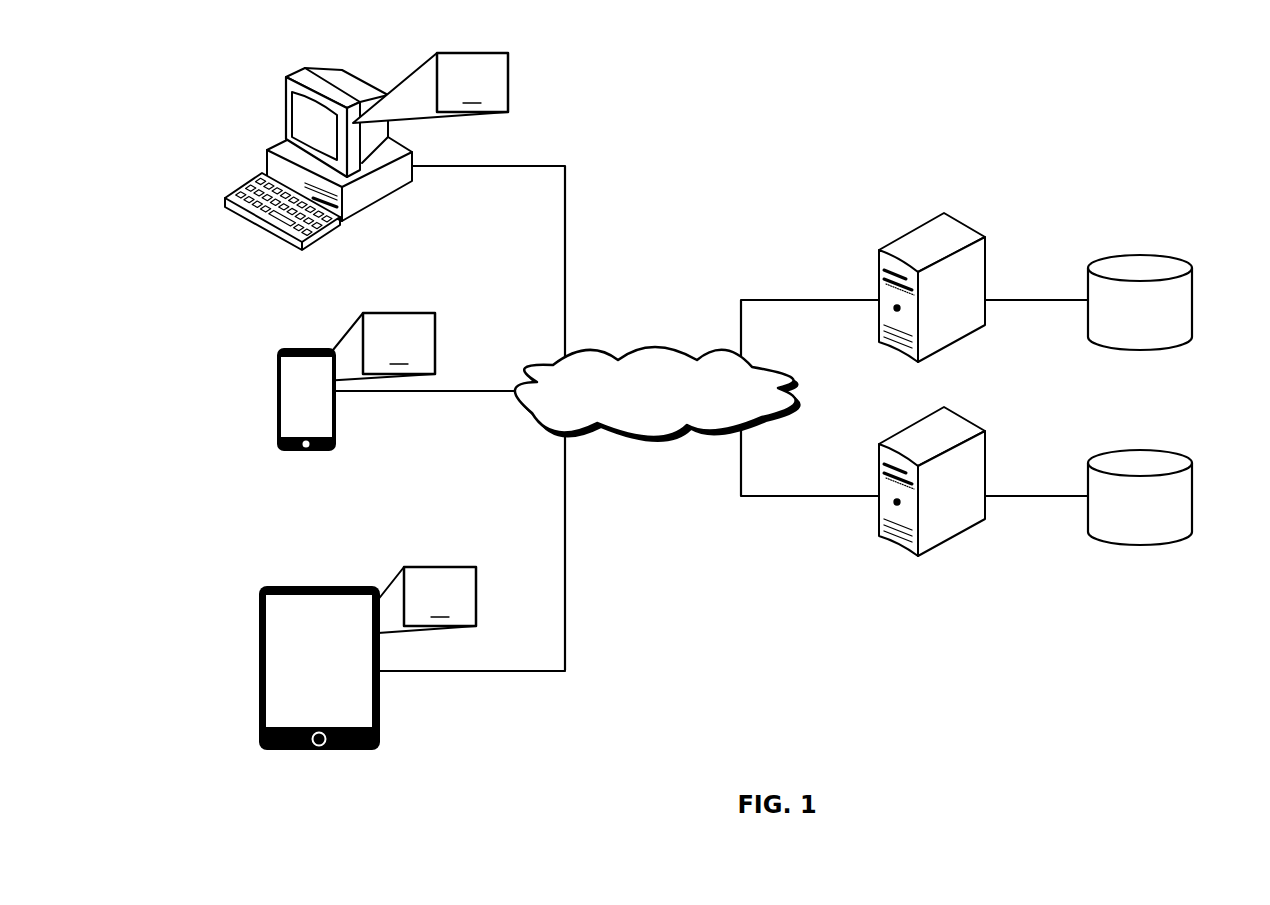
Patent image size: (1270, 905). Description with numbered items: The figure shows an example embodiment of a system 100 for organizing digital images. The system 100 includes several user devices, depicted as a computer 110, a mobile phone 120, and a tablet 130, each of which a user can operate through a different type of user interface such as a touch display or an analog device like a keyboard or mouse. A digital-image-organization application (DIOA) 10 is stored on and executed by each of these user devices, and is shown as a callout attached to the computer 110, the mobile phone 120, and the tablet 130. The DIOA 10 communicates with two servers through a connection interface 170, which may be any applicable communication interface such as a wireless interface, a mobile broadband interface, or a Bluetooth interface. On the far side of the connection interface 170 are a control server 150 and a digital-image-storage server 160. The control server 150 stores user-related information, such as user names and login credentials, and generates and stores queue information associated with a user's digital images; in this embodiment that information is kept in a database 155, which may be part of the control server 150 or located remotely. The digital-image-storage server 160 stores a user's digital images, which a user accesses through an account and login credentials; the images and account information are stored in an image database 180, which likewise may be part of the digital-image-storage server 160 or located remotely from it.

The system 100 is at (1137, 77).
The computer 110 is at (285, 100).
The mobile phone 120 is at (277, 380).
The tablet 130 is at (259, 610).
The digital-image-organization application 10 is at (407, 344).
The control server 150 is at (879, 268).
The database 155 is at (1193, 288).
The digital-image-storage server 160 is at (879, 525).
The connection interface 170 is at (657, 348).
The image database 180 is at (1194, 495).